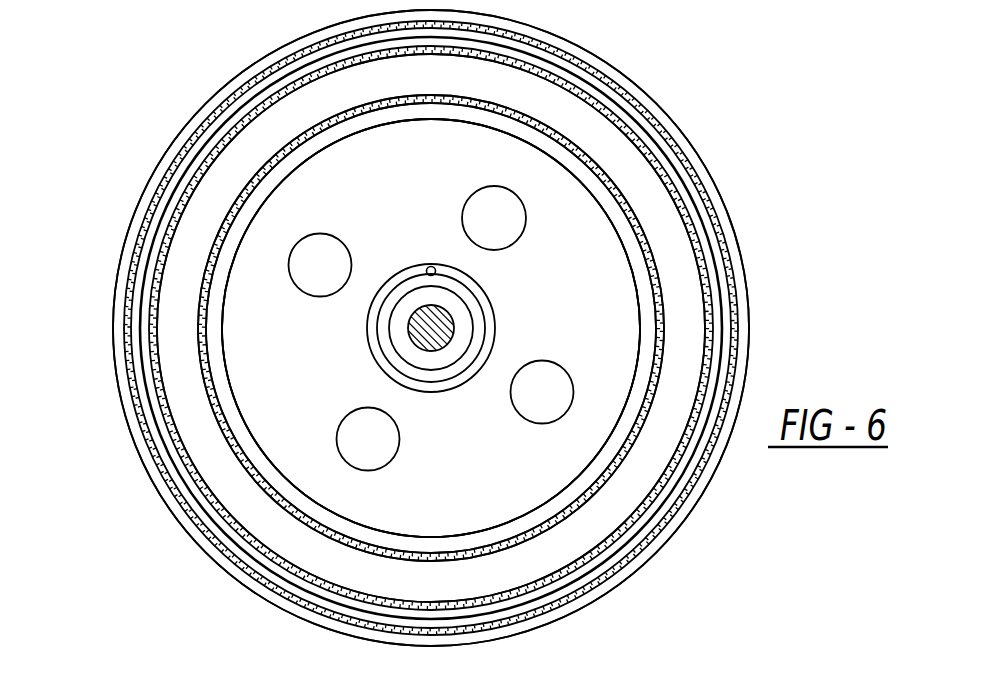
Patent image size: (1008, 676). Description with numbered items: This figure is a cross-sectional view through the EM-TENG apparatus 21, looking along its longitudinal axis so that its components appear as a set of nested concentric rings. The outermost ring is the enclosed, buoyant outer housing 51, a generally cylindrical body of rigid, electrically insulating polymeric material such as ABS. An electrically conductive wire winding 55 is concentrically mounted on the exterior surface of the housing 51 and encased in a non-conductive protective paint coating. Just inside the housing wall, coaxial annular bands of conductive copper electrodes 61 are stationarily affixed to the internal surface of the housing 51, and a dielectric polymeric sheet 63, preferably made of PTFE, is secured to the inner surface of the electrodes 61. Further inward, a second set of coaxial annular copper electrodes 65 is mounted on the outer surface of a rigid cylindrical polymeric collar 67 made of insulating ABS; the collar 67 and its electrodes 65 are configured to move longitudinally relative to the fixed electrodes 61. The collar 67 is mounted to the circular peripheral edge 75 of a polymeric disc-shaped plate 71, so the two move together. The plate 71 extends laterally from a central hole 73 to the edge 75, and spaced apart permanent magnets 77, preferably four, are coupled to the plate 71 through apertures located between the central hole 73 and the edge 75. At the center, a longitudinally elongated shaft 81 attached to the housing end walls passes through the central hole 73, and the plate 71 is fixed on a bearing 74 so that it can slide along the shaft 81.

The EM-TENG apparatus 21 is at (803, 141).
The outer housing 51 is at (253, 77).
The wire winding 55 is at (198, 115).
The electrodes 61 is at (583, 97).
The dielectric sheet 63 is at (175, 267).
The electrodes 65 is at (197, 335).
The collar 67 is at (233, 418).
The plate 71 is at (318, 369).
The central hole 73 is at (462, 308).
The bearing 74 is at (422, 298).
The peripheral edge 75 is at (640, 312).
The permanent magnets 77 is at (518, 231).
The shaft 81 is at (432, 330).